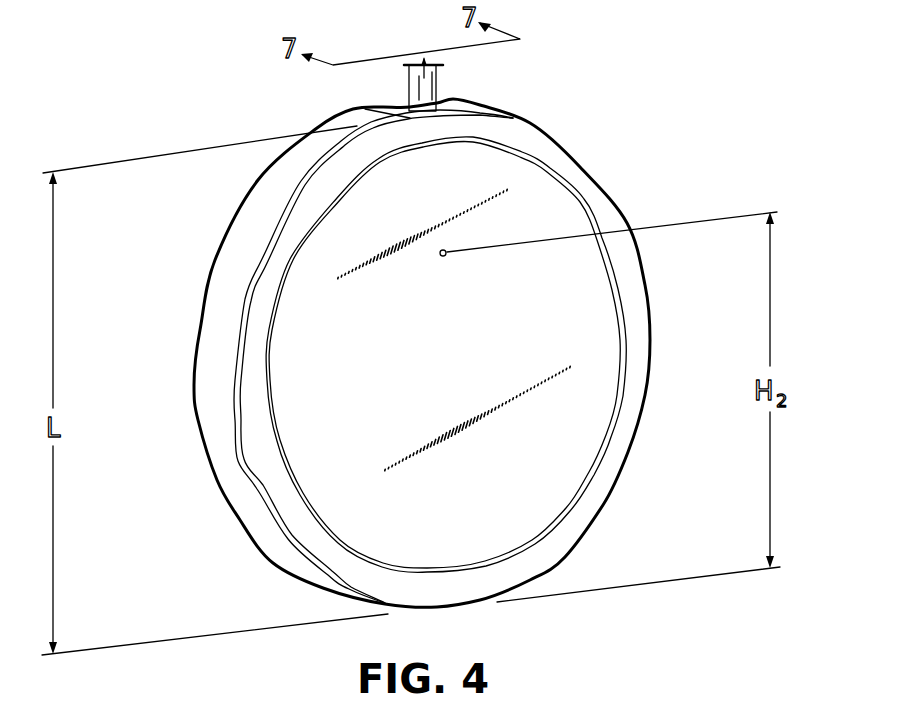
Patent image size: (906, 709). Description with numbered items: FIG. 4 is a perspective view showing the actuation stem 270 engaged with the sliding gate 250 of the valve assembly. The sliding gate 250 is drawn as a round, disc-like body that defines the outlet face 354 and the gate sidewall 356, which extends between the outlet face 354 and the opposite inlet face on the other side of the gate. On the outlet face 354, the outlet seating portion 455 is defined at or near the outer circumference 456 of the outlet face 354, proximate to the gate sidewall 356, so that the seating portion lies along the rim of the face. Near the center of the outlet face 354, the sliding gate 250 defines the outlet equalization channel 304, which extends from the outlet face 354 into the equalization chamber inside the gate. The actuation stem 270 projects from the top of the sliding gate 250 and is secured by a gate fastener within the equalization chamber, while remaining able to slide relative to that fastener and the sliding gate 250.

The sliding gate 250 is at (160, 243).
The actuation stem 270 is at (427, 88).
The outlet equalization channel 304 is at (450, 247).
The outlet face 354 is at (543, 358).
The gate sidewall 356 is at (205, 371).
The outlet seating portion 455 is at (293, 513).
The outer circumference 456 is at (240, 423).